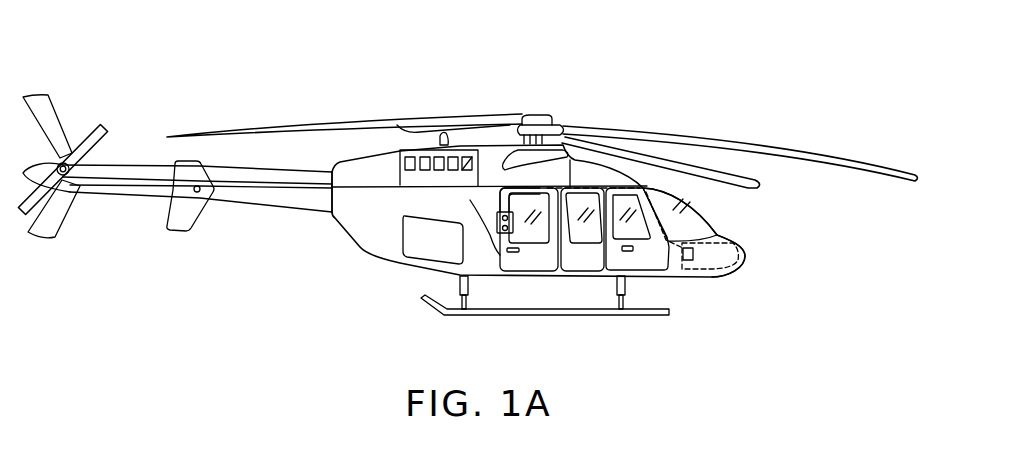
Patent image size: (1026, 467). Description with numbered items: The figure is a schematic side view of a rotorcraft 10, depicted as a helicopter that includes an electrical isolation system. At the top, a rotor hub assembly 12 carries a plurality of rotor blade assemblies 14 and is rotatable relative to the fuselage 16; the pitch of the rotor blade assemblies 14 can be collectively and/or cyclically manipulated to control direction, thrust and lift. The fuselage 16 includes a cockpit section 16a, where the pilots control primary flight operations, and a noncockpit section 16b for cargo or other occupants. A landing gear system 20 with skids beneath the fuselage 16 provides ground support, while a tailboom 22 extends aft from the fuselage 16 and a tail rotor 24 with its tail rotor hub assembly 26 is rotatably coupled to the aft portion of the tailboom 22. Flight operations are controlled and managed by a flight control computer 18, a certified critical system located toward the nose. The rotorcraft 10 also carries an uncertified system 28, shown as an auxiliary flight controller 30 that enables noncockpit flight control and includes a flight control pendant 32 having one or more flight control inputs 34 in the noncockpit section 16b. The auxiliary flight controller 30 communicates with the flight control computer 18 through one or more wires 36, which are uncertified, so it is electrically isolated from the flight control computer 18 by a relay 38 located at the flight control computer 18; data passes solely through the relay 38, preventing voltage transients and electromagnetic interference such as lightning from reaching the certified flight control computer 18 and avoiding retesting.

The rotorcraft 10 is at (402, 60).
The rotor hub assembly 12 is at (542, 109).
The rotor blade assemblies 14 is at (873, 160).
The fuselage 16 is at (358, 249).
The cockpit section 16a is at (688, 212).
The noncockpit section 16b is at (468, 212).
The flight control computer 18 is at (745, 248).
The landing gear system 20 is at (430, 308).
The tailboom 22 is at (237, 207).
The tail rotor 24 is at (91, 120).
The tail rotor hub assembly 26 is at (82, 192).
The uncertified system 28 is at (528, 213).
The auxiliary flight controller 30 is at (528, 213).
The flight control pendant 32 is at (513, 223).
The flight control inputs 34 is at (502, 233).
The wires 36 is at (600, 187).
The relay 38 is at (698, 253).